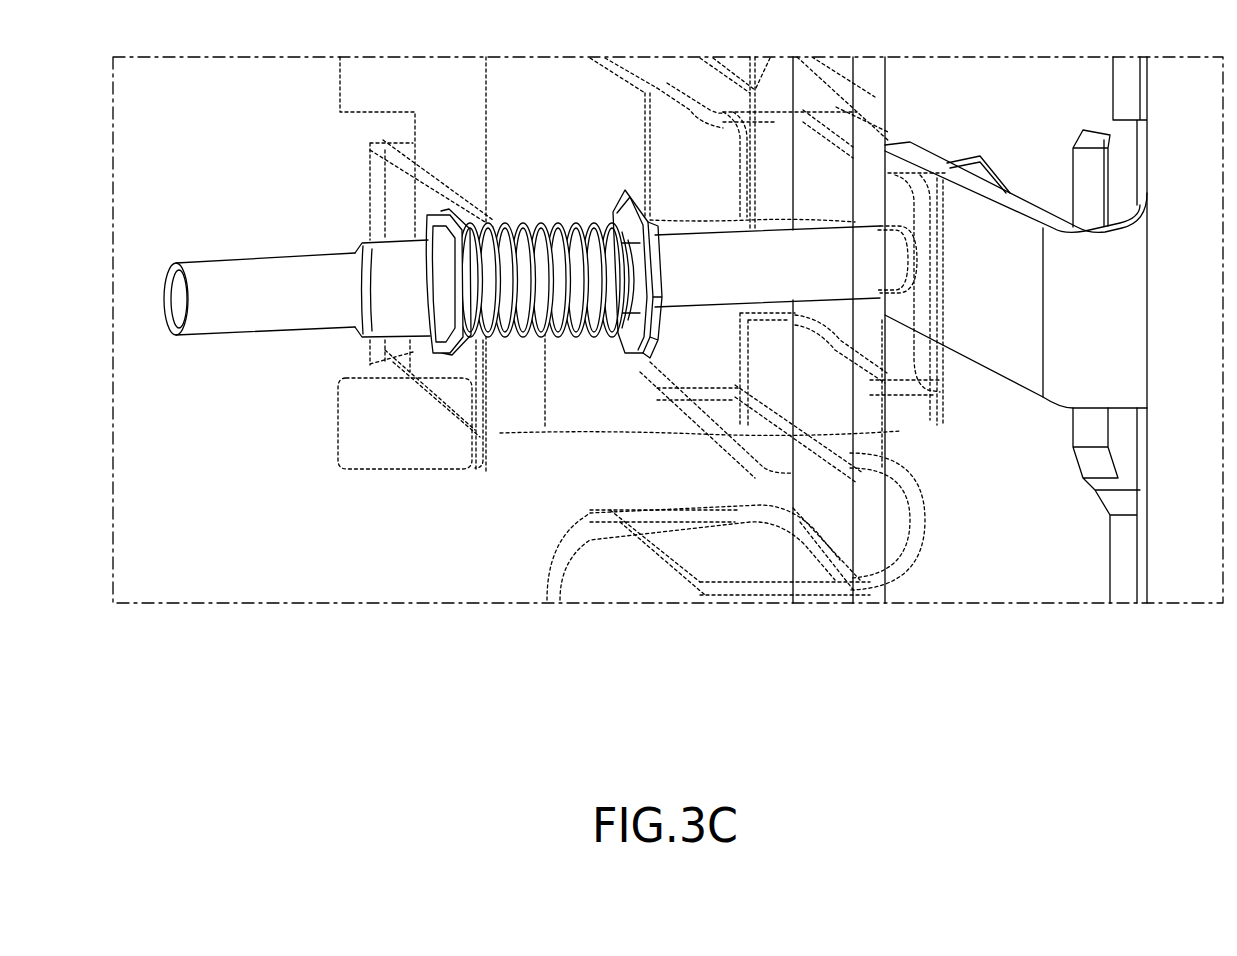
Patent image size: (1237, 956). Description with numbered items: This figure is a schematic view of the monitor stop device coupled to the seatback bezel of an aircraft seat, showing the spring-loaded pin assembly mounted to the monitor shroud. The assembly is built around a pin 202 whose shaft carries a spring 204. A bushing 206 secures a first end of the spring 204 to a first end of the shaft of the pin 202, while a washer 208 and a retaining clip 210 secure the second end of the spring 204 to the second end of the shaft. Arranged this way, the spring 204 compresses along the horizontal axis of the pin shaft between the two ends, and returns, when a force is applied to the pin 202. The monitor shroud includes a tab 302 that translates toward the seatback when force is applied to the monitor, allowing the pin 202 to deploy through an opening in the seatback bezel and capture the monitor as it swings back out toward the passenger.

The pin 202 is at (276, 312).
The spring 204 is at (558, 337).
The bushing 206 is at (452, 350).
The washer 208 is at (637, 353).
The retaining clip 210 is at (662, 278).
The tab 302 is at (990, 337).